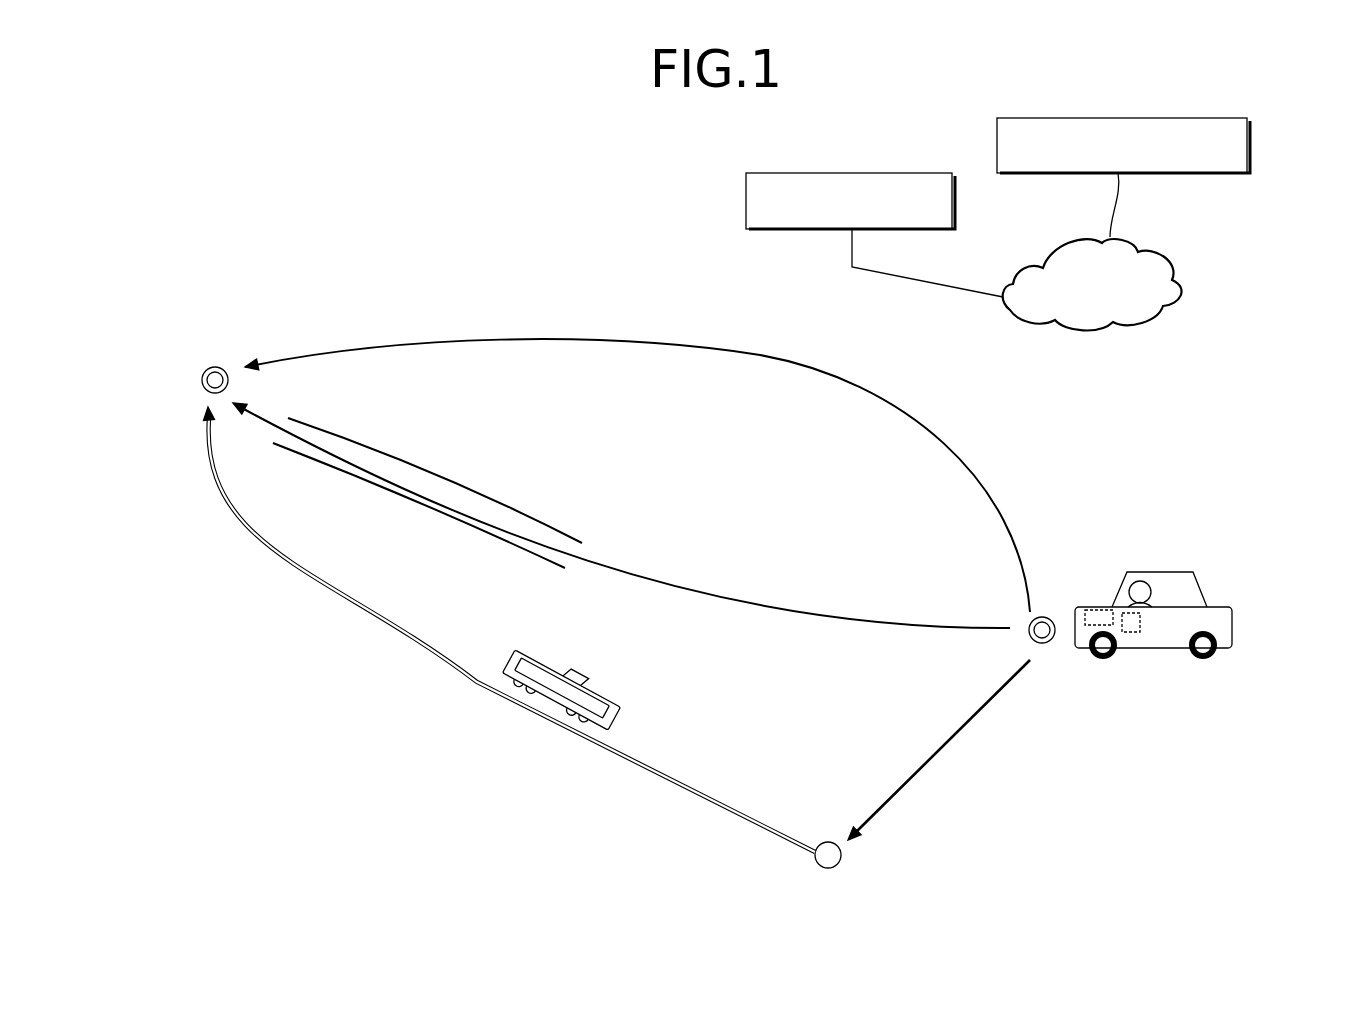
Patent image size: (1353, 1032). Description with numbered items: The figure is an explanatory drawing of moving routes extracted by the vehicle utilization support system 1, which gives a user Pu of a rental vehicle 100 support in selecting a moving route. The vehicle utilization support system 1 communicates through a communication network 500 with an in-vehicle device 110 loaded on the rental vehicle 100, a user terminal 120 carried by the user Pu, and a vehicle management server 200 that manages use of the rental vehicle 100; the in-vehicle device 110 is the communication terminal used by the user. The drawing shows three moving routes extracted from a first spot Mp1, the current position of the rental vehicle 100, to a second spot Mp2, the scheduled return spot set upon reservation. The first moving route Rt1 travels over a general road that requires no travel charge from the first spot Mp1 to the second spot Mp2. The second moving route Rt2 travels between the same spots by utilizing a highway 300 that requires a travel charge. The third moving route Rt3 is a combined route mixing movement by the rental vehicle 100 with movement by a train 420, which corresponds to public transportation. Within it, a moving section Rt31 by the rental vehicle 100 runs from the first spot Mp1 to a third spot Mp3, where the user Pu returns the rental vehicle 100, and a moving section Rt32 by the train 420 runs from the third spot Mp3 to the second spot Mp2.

The vehicle utilization support system 1 is at (1118, 117).
The vehicle management server 200 is at (845, 173).
The communication network 500 is at (1112, 330).
The rental vehicle 100 is at (1172, 609).
The in-vehicle device 110 is at (1097, 610).
The user terminal 120 is at (1140, 630).
The user Pu is at (1133, 582).
The highway 300 is at (402, 473).
The train 420 is at (588, 682).
The first spot Mp1 is at (1045, 644).
The second spot Mp2 is at (213, 367).
The third spot Mp3 is at (833, 869).
The first moving route Rt1 is at (632, 338).
The second moving route Rt2 is at (673, 588).
The third moving route Rt3 is at (630, 629).
The moving section by the rental vehicle Rt31 is at (950, 745).
The moving section by the train Rt32 is at (478, 683).